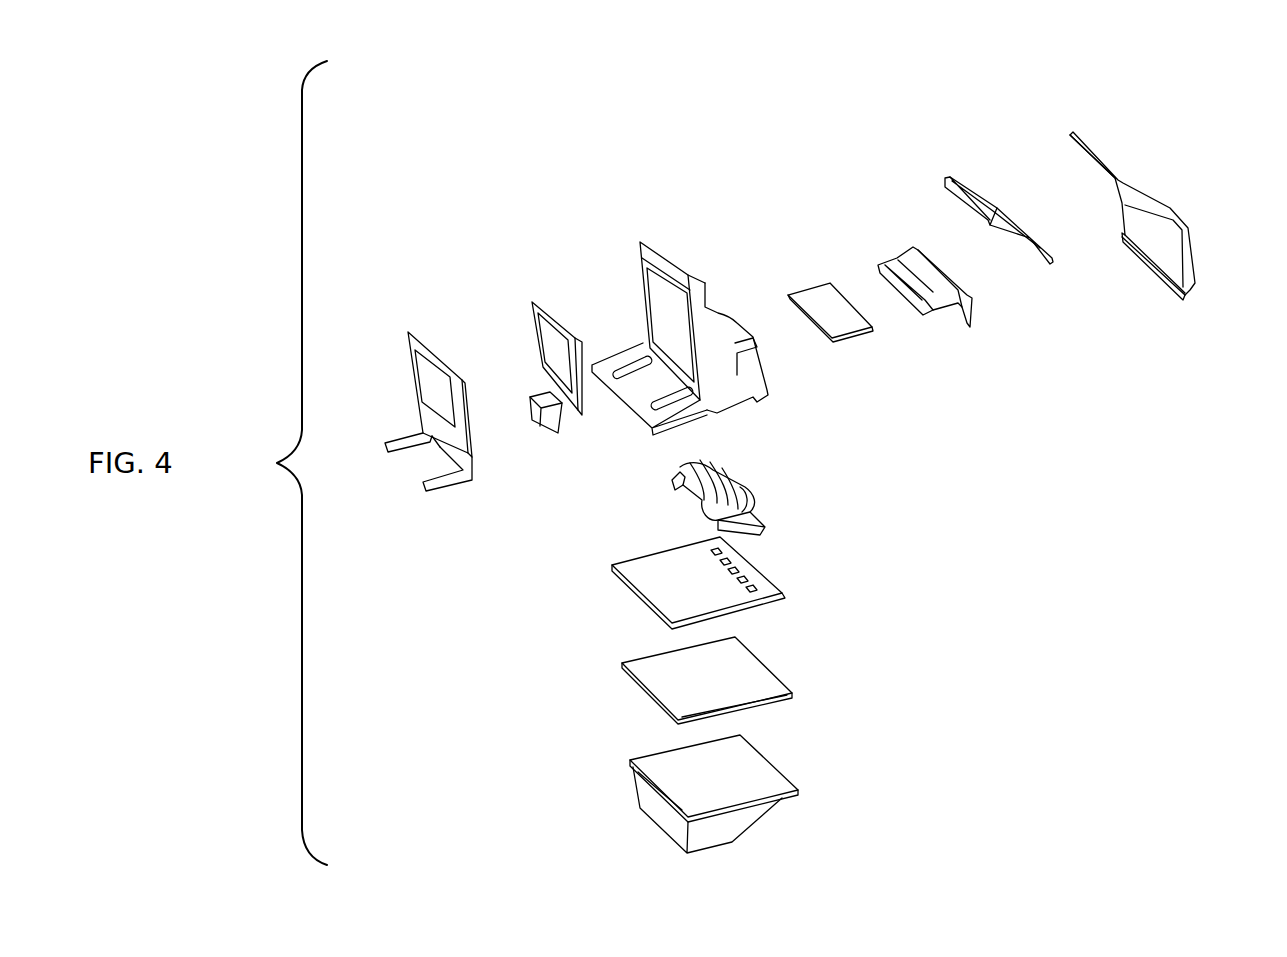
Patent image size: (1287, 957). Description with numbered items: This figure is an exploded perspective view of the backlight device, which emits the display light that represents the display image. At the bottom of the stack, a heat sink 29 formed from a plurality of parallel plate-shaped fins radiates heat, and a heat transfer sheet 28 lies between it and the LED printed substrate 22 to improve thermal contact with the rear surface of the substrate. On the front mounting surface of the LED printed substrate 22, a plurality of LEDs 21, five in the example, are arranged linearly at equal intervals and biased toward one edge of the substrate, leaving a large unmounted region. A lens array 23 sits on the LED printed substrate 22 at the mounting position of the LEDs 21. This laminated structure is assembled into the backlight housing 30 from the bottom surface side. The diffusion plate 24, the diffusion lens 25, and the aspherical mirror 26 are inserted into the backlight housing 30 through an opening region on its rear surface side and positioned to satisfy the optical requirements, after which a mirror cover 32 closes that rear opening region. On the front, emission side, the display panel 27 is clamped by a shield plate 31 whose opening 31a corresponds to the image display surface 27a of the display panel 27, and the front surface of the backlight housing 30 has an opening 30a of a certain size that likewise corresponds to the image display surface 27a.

The LEDs 21 is at (715, 550).
The LED printed substrate 22 is at (632, 582).
The lens array 23 is at (738, 477).
The diffusion plate 24 is at (812, 285).
The diffusion lens 25 is at (895, 262).
The aspherical mirror 26 is at (1030, 252).
The display panel 27 is at (543, 297).
The image display surface 27a is at (562, 368).
The heat transfer sheet 28 is at (770, 670).
The heat sink 29 is at (775, 758).
The backlight housing 30 is at (697, 278).
The opening 30a is at (662, 305).
The shield plate 31 is at (408, 332).
The opening 31a is at (430, 376).
The mirror cover 32 is at (1128, 177).